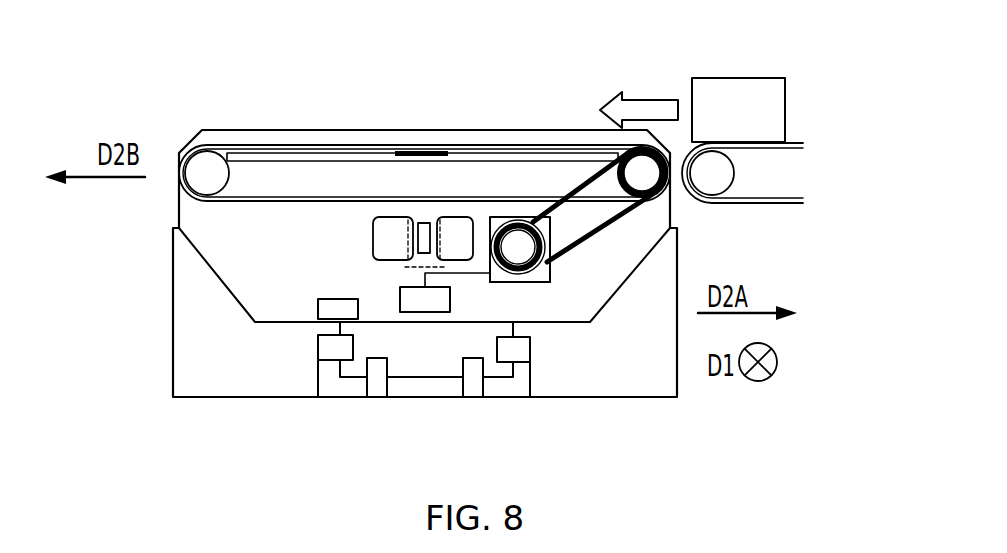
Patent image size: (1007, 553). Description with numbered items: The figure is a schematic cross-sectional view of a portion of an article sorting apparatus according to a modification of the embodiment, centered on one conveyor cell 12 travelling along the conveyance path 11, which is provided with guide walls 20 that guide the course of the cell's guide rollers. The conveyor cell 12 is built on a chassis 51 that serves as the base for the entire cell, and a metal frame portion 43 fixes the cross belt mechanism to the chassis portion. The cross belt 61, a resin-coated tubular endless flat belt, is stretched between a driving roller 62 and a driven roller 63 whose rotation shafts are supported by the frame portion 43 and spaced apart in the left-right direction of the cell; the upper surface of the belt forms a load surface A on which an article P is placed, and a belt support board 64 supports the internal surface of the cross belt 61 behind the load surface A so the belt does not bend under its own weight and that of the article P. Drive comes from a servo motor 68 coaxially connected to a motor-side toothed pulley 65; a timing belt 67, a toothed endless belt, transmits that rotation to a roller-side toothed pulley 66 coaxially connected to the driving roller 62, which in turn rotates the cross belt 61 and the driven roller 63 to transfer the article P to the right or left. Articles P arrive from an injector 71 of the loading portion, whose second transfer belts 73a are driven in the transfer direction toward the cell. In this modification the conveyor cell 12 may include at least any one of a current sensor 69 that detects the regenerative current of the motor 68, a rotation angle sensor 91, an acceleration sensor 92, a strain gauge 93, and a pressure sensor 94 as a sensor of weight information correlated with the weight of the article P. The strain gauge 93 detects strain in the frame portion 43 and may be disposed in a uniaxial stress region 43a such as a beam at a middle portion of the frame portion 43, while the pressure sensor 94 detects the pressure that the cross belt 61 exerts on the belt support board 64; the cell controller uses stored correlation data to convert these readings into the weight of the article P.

The conveyance path 11 is at (158, 362).
The conveyor cell 12 is at (814, 57).
The guide walls 20 is at (318, 362).
The frame portion 43 is at (226, 280).
The uniaxial stress region 43a is at (401, 213).
The chassis 51 is at (423, 378).
The cross belt 61 is at (323, 140).
The driving roller 62 is at (620, 213).
The driven roller 63 is at (211, 157).
The belt support board 64 is at (510, 153).
The motor-side toothed pulley 65 is at (521, 256).
The roller-side toothed pulley 66 is at (620, 150).
The timing belt 67 is at (600, 227).
The motor 68 is at (498, 284).
The current sensor 69 is at (401, 296).
The injector 71 is at (795, 177).
The second transfer belt 73a is at (797, 140).
The rotation angle sensor 91 is at (548, 283).
The acceleration sensor 92 is at (318, 305).
The strain gauge 93 is at (424, 217).
The pressure sensor 94 is at (433, 146).
The load surface A is at (255, 137).
The article P is at (758, 87).